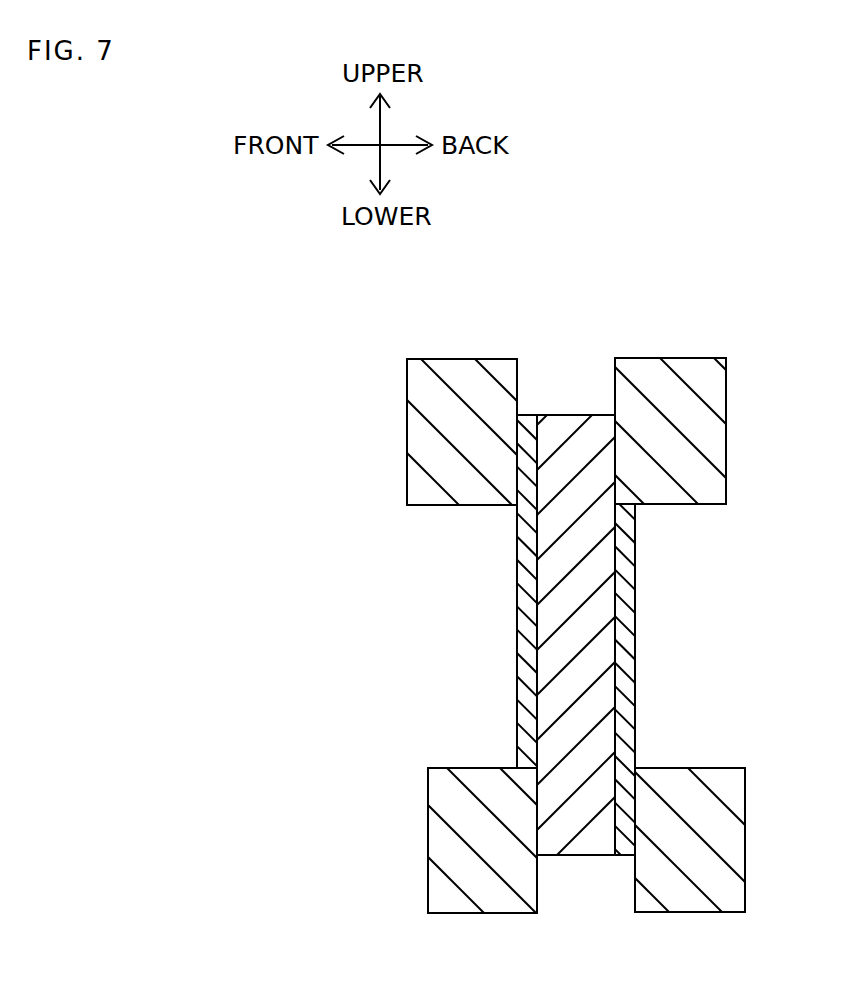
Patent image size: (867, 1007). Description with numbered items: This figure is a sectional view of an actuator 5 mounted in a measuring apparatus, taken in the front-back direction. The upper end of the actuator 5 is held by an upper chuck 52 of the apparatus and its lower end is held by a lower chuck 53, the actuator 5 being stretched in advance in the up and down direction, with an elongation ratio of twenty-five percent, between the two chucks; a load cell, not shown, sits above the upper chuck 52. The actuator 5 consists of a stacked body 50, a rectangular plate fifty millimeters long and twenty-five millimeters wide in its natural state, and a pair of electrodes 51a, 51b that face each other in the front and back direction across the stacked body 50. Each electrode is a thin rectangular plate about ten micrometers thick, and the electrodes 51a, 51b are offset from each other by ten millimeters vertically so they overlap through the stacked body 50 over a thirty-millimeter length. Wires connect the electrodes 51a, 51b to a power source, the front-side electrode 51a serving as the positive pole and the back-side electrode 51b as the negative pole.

The actuator 5 is at (590, 638).
The stacked body 50 is at (573, 455).
The front-side electrode 51a is at (525, 598).
The back-side electrode 51b is at (623, 596).
The upper chuck 52 is at (418, 392).
The lower chuck 53 is at (443, 893).